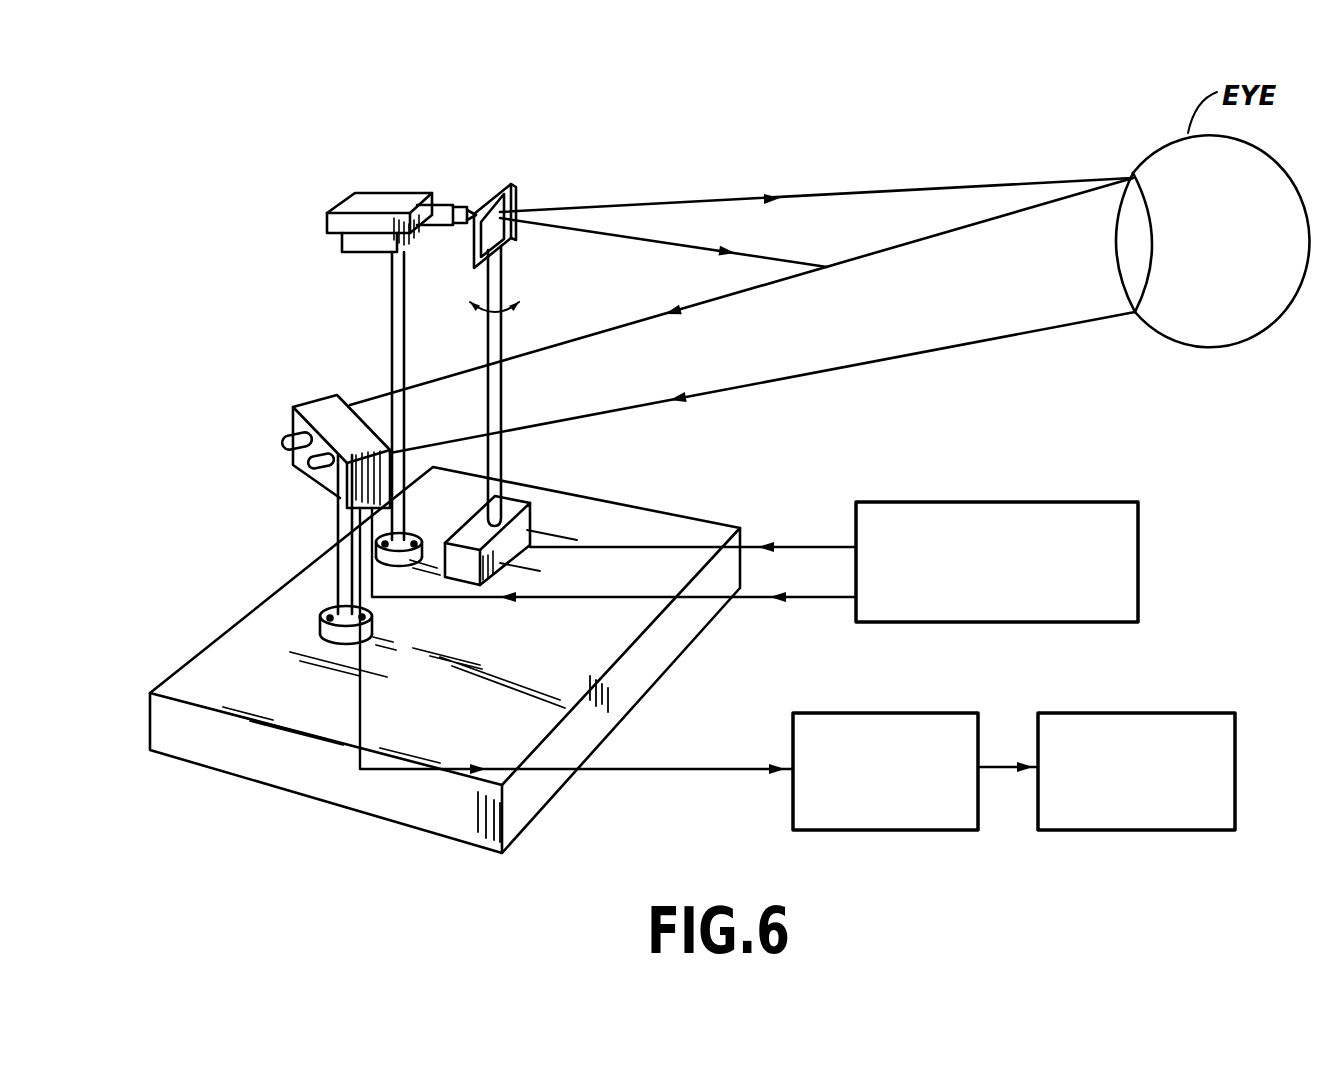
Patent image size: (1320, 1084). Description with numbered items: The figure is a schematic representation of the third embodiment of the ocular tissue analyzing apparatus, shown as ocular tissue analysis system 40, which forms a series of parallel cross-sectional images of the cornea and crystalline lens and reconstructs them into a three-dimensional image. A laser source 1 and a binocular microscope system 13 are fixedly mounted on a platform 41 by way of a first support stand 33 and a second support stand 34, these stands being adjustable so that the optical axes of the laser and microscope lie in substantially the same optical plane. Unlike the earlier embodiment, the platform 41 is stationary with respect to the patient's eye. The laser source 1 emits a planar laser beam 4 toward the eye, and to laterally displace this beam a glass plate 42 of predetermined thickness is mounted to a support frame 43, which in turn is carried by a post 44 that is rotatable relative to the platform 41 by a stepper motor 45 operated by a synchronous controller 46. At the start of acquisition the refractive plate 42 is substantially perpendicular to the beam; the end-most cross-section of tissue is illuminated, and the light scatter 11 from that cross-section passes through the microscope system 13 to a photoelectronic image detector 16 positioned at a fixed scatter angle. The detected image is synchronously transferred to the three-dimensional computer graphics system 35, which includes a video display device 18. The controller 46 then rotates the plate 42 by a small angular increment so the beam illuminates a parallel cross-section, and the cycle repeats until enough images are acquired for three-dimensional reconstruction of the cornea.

The planar laser beam source 1 is at (440, 155).
The planar laser beam 4 is at (857, 190).
The light scatter 11 is at (830, 370).
The binocular microscope system 13 is at (312, 407).
The photoelectronic image detector 16 is at (360, 490).
The video display device 18 is at (1178, 831).
The first support stand 33 is at (337, 547).
The second support stand 34 is at (395, 292).
The 3-D computer graphics system 35 is at (902, 832).
The ocular tissue analysis system 40 is at (252, 802).
The platform 41 is at (337, 793).
The glass plate 42 is at (513, 181).
The support frame 43 is at (513, 242).
The post 44 is at (507, 466).
The stepper motor 45 is at (523, 540).
The synchronous controller 46 is at (1134, 503).